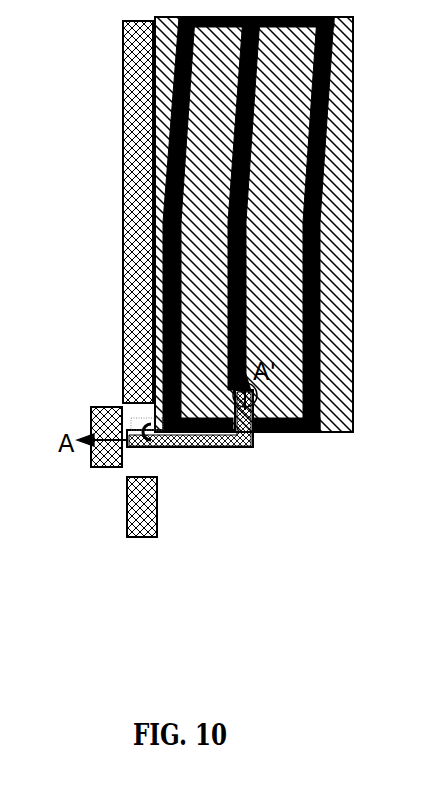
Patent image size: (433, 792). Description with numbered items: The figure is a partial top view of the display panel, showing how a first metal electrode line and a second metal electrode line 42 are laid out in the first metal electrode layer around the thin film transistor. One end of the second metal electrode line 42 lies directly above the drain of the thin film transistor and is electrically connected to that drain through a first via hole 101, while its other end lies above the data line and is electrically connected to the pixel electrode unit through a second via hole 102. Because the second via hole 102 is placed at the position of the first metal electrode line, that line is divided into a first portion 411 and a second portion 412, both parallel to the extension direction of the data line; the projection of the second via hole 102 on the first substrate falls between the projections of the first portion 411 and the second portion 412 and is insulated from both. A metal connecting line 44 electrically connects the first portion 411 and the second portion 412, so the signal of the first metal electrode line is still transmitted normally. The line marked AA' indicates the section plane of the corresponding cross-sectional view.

The first via hole 101 is at (260, 432).
The second via hole 102 is at (157, 447).
The first portion 411 is at (123, 352).
The second portion 412 is at (142, 537).
The second metal electrode line 42 is at (207, 448).
The metal connecting line 44 is at (108, 468).